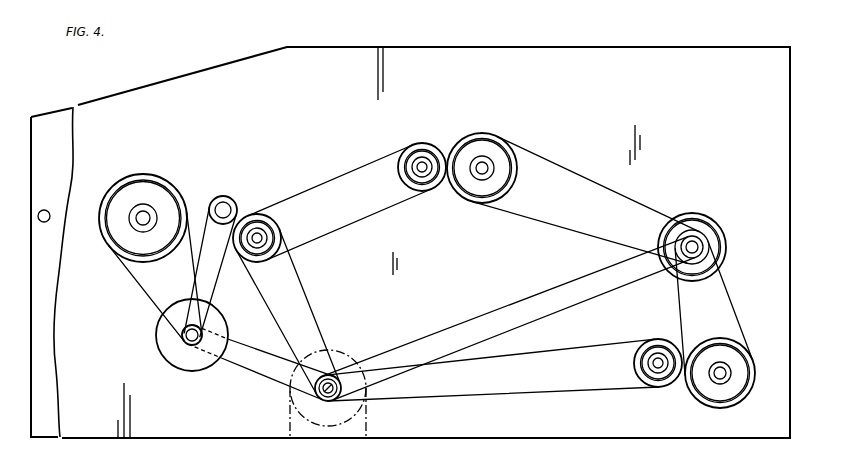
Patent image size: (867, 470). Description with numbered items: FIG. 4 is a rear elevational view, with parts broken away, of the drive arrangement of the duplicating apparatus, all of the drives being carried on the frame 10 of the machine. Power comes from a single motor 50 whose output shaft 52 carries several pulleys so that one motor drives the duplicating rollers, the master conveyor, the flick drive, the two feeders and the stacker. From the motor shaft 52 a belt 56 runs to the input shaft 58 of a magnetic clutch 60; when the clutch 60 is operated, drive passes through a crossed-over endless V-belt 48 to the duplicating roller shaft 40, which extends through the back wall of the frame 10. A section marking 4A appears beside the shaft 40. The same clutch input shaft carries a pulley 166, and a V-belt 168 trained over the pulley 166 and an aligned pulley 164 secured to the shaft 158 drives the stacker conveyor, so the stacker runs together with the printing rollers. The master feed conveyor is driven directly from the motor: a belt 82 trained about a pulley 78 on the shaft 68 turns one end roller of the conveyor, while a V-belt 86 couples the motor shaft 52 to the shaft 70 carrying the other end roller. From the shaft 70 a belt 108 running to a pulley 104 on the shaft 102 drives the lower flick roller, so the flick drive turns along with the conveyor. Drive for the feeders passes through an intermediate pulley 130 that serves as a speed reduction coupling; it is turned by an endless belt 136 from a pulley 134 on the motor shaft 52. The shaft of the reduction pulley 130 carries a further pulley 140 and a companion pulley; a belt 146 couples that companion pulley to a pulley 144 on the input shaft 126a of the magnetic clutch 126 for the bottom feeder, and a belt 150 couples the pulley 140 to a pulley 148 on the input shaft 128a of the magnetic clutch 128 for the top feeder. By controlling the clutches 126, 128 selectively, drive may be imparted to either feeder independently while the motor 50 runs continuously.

The frame 10 is at (250, 72).
The pulley 164 is at (150, 181).
The shaft 158 is at (143, 218).
The V-belt 168 is at (150, 298).
The section indicator 4A is at (222, 200).
The duplicating roller shaft 40 is at (230, 198).
The crossed-over endless V-belt 48 is at (221, 264).
The shaft 70 is at (260, 238).
The belt 82 is at (258, 261).
The V-belt 86 is at (306, 294).
The belt 108 is at (358, 171).
The magnetic clutch 60 is at (190, 371).
The input shaft 58 is at (185, 345).
The pulley 166 is at (191, 340).
The belt 56 is at (255, 373).
The motor 50 is at (372, 404).
The output shaft 52 is at (326, 400).
The pulley 134 is at (330, 401).
The transverse shaft 102 is at (422, 167).
The pulley 104 is at (430, 190).
The magnetic clutch 128 is at (491, 135).
The pulley 148 is at (500, 150).
The input shaft 128a is at (483, 178).
The belt 150 is at (627, 199).
The intermediate pulley 130 is at (727, 247).
The pulley 140 is at (700, 240).
The endless belt 136 is at (537, 290).
The belt 146 is at (735, 312).
The pulley 78 is at (636, 360).
The shaft 68 is at (658, 357).
The magnetic clutch 126 is at (738, 400).
The pulley 144 is at (706, 402).
The input shaft 126a is at (730, 374).